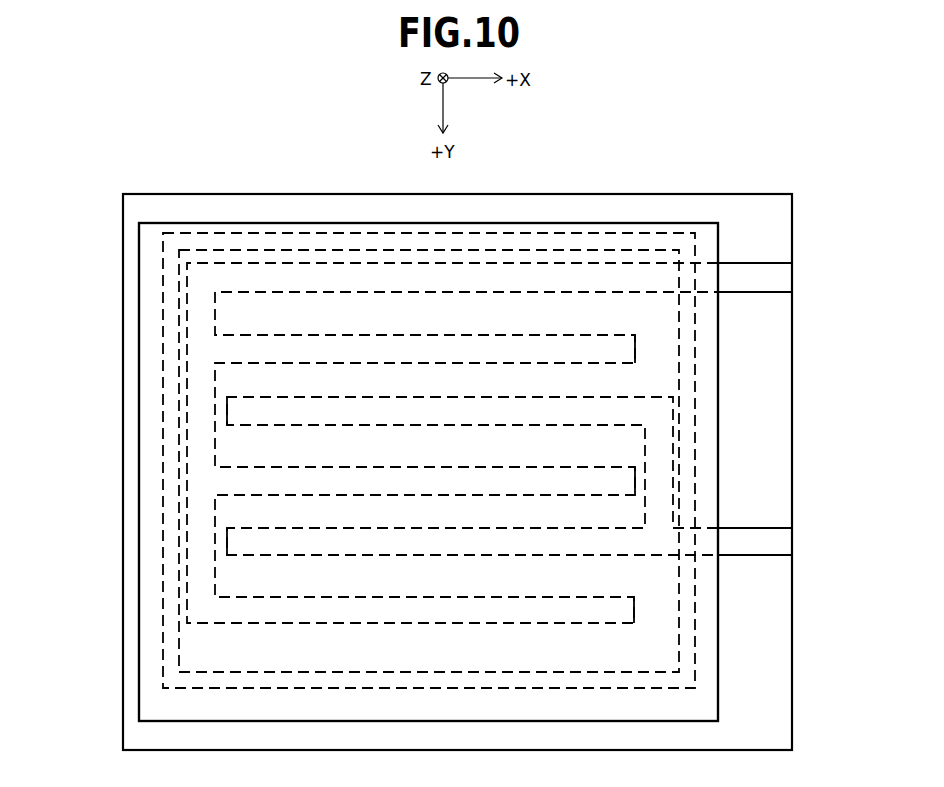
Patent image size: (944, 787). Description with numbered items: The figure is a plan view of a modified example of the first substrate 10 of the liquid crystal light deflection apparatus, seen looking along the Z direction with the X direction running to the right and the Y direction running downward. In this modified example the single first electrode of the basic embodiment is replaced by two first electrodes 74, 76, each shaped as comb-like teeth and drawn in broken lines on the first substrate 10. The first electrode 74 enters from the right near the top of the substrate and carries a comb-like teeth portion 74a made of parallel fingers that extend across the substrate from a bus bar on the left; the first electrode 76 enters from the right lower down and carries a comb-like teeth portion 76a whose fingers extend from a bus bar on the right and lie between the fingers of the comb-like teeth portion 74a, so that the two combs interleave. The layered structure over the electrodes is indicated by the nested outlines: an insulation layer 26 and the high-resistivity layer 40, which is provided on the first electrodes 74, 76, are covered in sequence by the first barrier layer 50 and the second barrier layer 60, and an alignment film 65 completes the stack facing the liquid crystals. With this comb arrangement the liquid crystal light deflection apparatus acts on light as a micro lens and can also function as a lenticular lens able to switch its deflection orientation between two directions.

The first substrate 10 is at (123, 714).
The insulation layer 26 is at (359, 461).
The high-resistivity layer 40 is at (181, 272).
The first barrier layer 50 is at (163, 316).
The second barrier layer 60 is at (139, 626).
The alignment film 65 is at (139, 657).
The first electrode 74 is at (752, 262).
The comb-like teeth portion 74a is at (636, 352).
The first electrode 76 is at (763, 557).
The comb-like teeth portion 76a is at (227, 407).